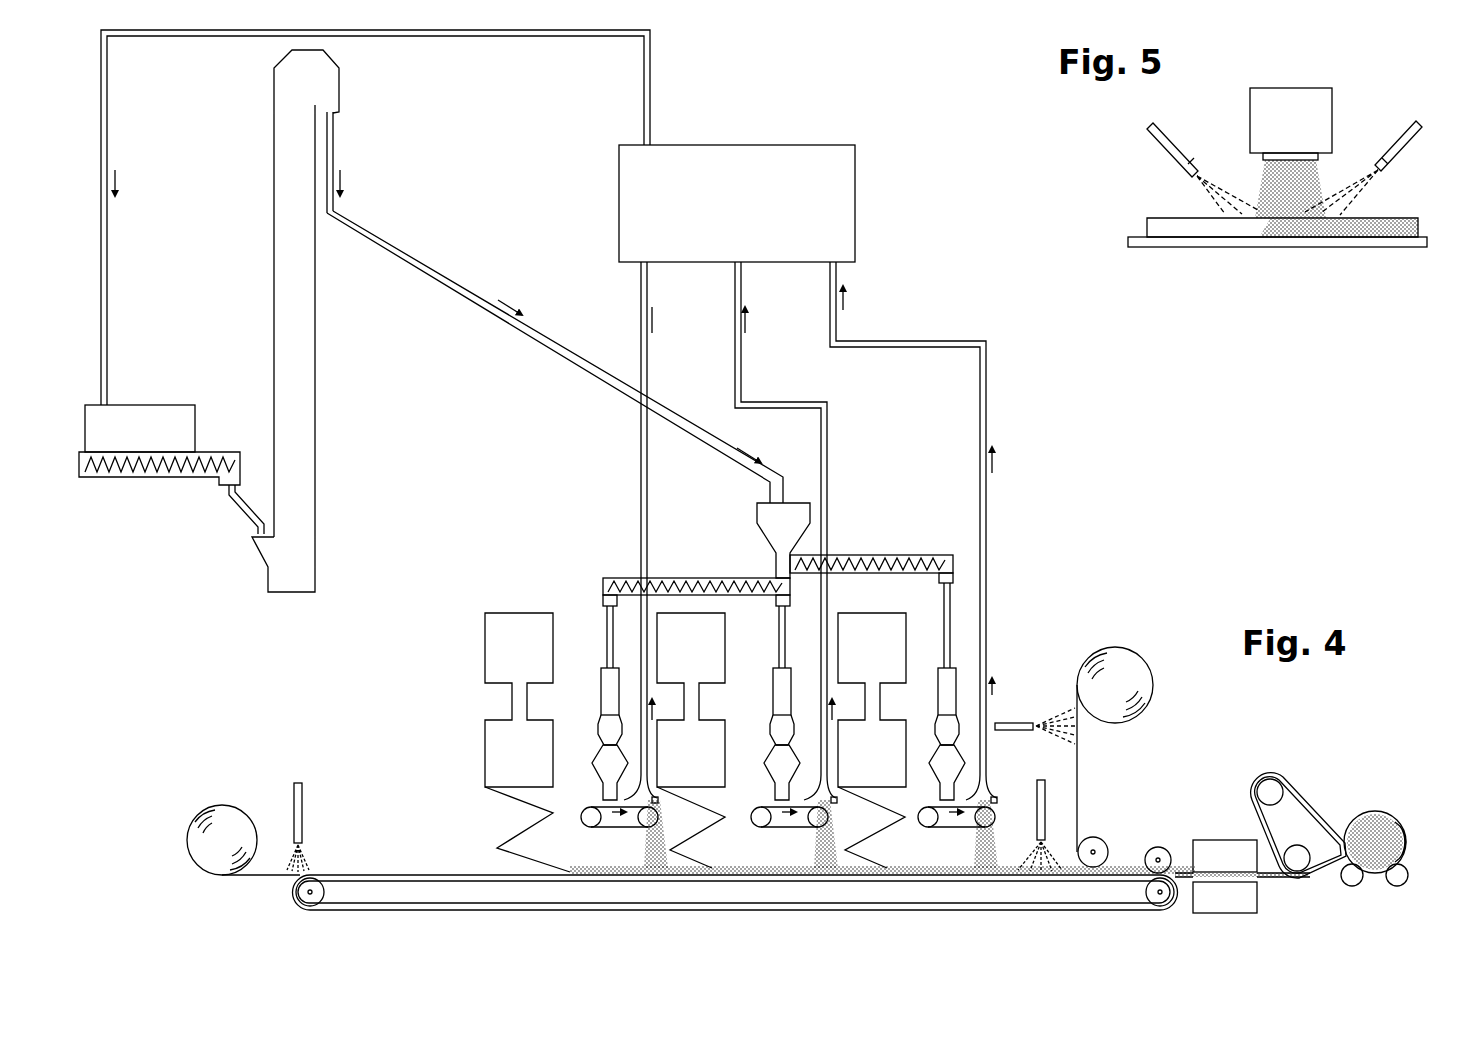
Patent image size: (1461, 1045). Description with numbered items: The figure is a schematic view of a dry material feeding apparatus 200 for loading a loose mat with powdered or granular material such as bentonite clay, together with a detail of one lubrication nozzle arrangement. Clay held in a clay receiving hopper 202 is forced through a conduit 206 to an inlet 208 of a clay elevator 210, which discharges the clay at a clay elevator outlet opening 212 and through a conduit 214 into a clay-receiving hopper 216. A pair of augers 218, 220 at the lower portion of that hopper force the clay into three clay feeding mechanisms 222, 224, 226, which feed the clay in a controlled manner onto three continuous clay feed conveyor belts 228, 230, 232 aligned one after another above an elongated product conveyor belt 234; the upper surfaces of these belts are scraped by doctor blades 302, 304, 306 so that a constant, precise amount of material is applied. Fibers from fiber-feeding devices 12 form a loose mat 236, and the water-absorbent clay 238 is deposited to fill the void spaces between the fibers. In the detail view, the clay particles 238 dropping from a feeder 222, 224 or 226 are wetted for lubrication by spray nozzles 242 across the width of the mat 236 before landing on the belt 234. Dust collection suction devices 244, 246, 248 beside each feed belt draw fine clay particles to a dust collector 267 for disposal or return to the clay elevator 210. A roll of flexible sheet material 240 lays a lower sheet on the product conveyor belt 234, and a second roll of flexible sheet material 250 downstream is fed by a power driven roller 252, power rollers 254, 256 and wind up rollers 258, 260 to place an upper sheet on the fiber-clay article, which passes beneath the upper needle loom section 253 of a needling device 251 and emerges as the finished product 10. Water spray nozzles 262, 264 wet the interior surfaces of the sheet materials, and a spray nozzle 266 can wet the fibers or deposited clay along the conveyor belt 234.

In FIG. 4, the finished web product roll 10 is at (1377, 808).
In FIG. 4, the fiber-feeding device 12 is at (492, 748).
In FIG. 4, the dry material feeding apparatus 200 is at (563, 250).
In FIG. 4, the clay receiving hopper 202 is at (148, 415).
In FIG. 4, the conduit 206 is at (233, 505).
In FIG. 4, the inlet 208 is at (270, 525).
In FIG. 4, the clay elevator 210 is at (320, 321).
In FIG. 4, the clay elevator outlet opening 212 is at (333, 115).
In FIG. 4, the conduit 214 is at (450, 282).
In FIG. 4, the clay-receiving hopper 216 is at (800, 515).
In FIG. 4, the auger 218 is at (667, 572).
In FIG. 4, the auger 220 is at (900, 555).
In FIG. 4, the clay feeding mechanism 222 is at (582, 685).
In FIG. 5, the clay feeding mechanism 222 is at (1289, 99).
In FIG. 4, the clay feeding mechanism 224 is at (764, 703).
In FIG. 5, the clay feeding mechanism 224 is at (1289, 99).
In FIG. 4, the clay feeding mechanism 226 is at (957, 691).
In FIG. 5, the clay feeding mechanism 226 is at (1263, 95).
In FIG. 4, the clay feed conveyor belt 228 is at (603, 830).
In FIG. 5, the clay feed conveyor belt 228 is at (1282, 249).
In FIG. 4, the clay feed conveyor belt 230 is at (773, 830).
In FIG. 5, the clay feed conveyor belt 230 is at (1282, 249).
In FIG. 4, the clay feed conveyor belt 232 is at (947, 830).
In FIG. 5, the clay feed conveyor belt 232 is at (1366, 240).
In FIG. 4, the product conveyor belt 234 is at (373, 900).
In FIG. 5, the product conveyor belt 234 is at (1396, 248).
In FIG. 4, the loose mat 236 is at (575, 870).
In FIG. 5, the loose mat 236 is at (1375, 215).
In FIG. 5, the water-absorbent clay 238 is at (1268, 180).
In FIG. 4, the roll of flexible sheet material 240 is at (225, 806).
In FIG. 5, the spray nozzle 242 is at (1180, 158).
In FIG. 4, the dust collection suction device 244 is at (600, 745).
In FIG. 4, the dust collection suction device 246 is at (798, 760).
In FIG. 4, the dust collection suction device 248 is at (990, 755).
In FIG. 4, the second roll of flexible sheet material 250 is at (1145, 675).
In FIG. 4, the needling device 251 is at (1204, 832).
In FIG. 4, the power driven roller 252 is at (1105, 840).
In FIG. 4, the upper needle loom section 253 is at (1230, 852).
In FIG. 4, the power roller 254 is at (1310, 872).
In FIG. 4, the power roller 256 is at (1270, 793).
In FIG. 4, the wind up roller 258 is at (1350, 884).
In FIG. 4, the wind up roller 260 is at (1388, 893).
In FIG. 4, the water spray nozzle 262 is at (302, 795).
In FIG. 4, the water spray nozzle 264 is at (1010, 722).
In FIG. 4, the spray nozzle 266 is at (1035, 772).
In FIG. 4, the dust collector 267 is at (850, 203).
In FIG. 4, the doctor blade 302 is at (658, 800).
In FIG. 4, the doctor blade 304 is at (828, 800).
In FIG. 4, the doctor blade 306 is at (997, 800).